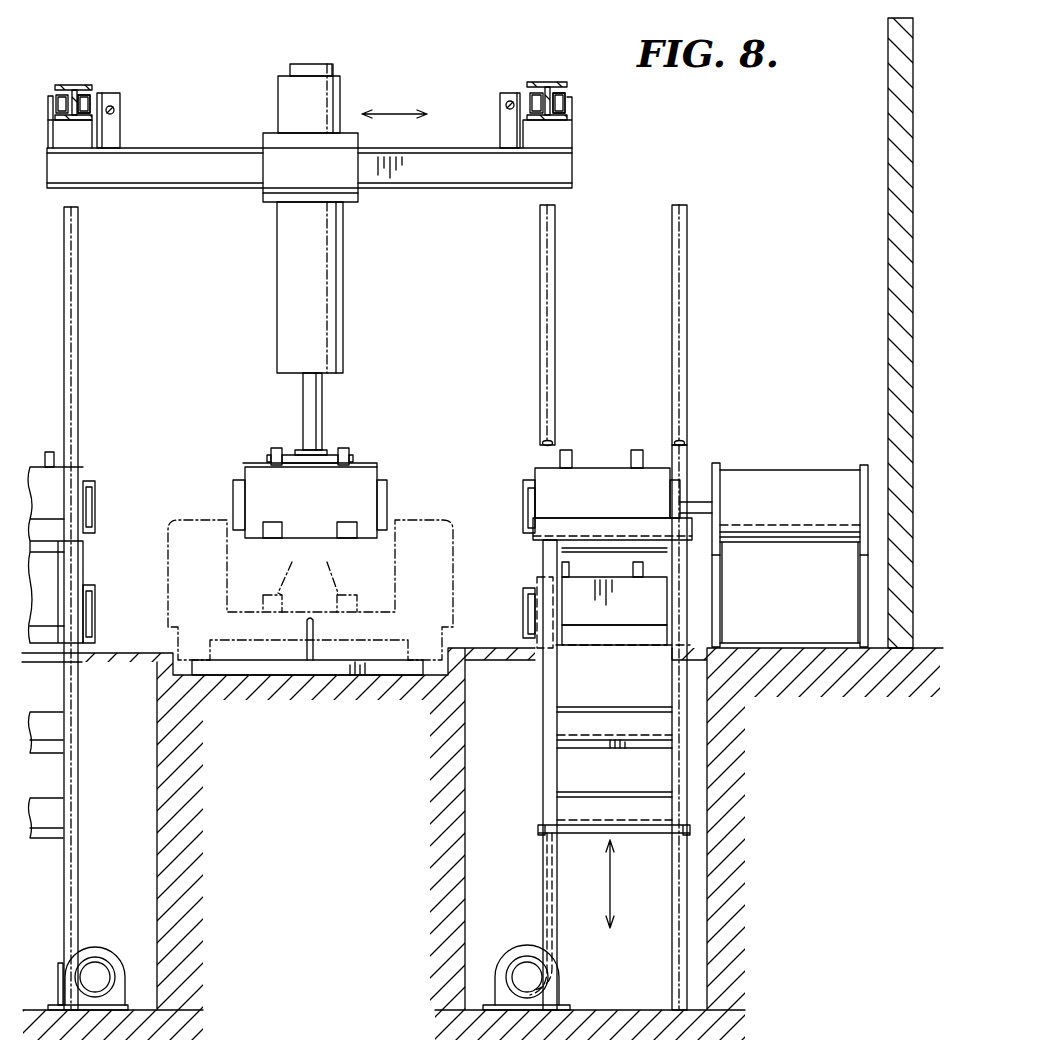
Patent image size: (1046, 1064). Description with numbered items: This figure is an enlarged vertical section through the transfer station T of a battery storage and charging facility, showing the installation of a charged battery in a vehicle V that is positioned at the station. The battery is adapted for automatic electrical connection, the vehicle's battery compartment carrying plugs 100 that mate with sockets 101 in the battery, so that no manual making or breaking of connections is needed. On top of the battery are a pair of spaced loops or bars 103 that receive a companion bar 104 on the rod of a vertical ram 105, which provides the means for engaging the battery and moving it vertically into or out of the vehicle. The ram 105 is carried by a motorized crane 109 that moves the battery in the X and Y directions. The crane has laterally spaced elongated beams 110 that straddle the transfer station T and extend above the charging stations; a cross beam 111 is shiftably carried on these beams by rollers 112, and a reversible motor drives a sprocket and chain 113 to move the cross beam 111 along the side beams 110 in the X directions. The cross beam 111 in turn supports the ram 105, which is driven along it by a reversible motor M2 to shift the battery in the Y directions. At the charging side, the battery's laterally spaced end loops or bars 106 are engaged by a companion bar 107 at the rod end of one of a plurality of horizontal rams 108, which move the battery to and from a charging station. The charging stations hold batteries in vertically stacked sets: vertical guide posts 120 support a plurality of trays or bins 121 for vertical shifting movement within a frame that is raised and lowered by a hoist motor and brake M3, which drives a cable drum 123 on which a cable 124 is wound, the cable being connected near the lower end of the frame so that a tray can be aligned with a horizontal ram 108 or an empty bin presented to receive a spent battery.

The plugs 100 is at (330, 570).
The sockets 101 is at (363, 500).
The top loops or bars 103 is at (347, 448).
The companion bar 104 is at (268, 457).
The vertical ram 105 is at (343, 258).
The connecting member 106 is at (682, 482).
The companion bar 107 is at (670, 500).
The horizontal rams 108 is at (788, 478).
The motorized crane 109 is at (463, 130).
The elongated beams 110 is at (65, 85).
The cross beam 111 is at (170, 190).
The rollers 112 is at (88, 90).
The sprocket and chain 113 is at (115, 109).
The vertical guide posts 120 is at (79, 324).
The trays or bins 121 is at (583, 540).
The cable drum 123 is at (507, 977).
The cable 124 is at (553, 938).
The reversible motor M2 is at (287, 98).
The hoist motor and brake M3 is at (98, 942).
The vehicle V is at (168, 520).
The transfer station T is at (270, 664).